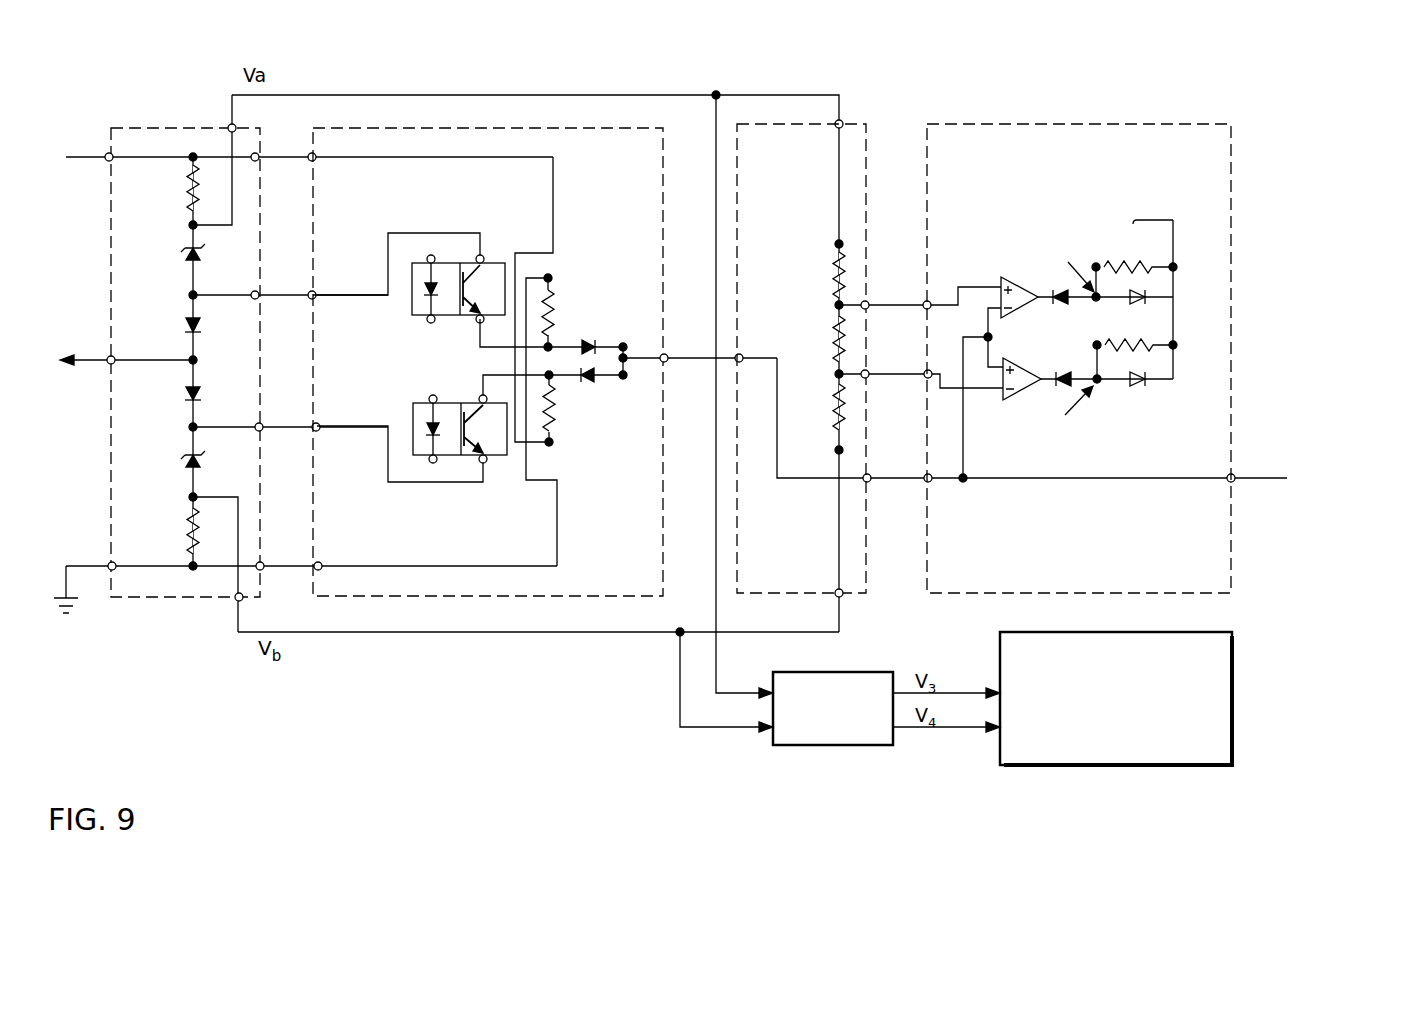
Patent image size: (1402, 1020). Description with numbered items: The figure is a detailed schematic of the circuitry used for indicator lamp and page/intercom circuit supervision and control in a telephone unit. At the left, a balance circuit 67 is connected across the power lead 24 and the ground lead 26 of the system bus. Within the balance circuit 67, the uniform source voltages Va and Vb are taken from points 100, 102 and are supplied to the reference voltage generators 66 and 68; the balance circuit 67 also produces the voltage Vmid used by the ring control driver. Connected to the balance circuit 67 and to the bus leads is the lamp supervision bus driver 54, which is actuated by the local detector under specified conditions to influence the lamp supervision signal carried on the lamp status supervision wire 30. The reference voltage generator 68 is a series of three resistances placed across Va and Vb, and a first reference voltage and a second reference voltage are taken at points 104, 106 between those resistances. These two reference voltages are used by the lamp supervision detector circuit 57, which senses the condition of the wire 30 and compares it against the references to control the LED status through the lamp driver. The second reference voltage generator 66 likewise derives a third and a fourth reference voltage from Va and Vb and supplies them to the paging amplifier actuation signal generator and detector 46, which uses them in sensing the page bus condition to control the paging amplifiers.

The power lead 24 is at (88, 157).
The ground lead 26 is at (85, 566).
The lamp status supervision wire 30 is at (1303, 520).
The paging amplifier actuation signal generator and detector 46 is at (1222, 636).
The lamp supervision (L.S.) bus driver 54 is at (458, 605).
The lamp supervision (L.S.) detector circuit 57 is at (1067, 116).
The reference voltage generator 66 is at (856, 672).
The balance circuit 67 is at (224, 416).
The reference voltage generator 68 is at (862, 320).
The point 100 is at (190, 225).
The point 102 is at (193, 497).
The point 104 is at (838, 244).
The point 106 is at (838, 374).